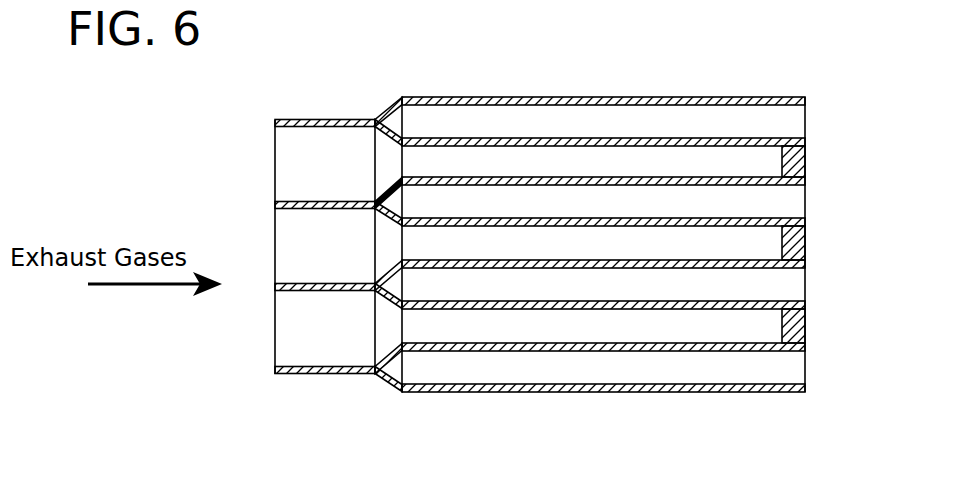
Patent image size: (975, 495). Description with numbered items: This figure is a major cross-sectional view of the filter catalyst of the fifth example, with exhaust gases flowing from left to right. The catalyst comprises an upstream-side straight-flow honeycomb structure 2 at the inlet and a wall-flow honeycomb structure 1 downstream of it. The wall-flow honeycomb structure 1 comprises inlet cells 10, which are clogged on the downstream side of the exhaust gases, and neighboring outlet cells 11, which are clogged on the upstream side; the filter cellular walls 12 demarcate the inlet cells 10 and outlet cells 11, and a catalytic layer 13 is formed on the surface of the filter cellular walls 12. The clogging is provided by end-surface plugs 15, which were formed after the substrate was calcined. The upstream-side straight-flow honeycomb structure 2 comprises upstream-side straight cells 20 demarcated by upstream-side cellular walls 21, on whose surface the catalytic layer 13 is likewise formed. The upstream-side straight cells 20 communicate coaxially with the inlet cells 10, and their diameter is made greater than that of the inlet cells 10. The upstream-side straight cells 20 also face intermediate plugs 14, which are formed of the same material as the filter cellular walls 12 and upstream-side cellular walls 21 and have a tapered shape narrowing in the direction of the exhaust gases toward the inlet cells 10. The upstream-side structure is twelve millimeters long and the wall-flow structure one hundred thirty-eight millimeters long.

The wall-flow honeycomb structure 1 is at (808, 91).
The upstream-side straight-flow honeycomb structure 2 is at (275, 92).
The inlet cells 10 is at (753, 160).
The outlet cells 11 is at (790, 287).
The filter cellular walls 12 is at (748, 138).
The catalytic layer 13 is at (552, 372).
The intermediate plugs 14 is at (378, 358).
The end-surface plugs 15 is at (806, 162).
The upstream-side straight cells 20 is at (292, 164).
The upstream-side cellular walls 21 is at (293, 212).